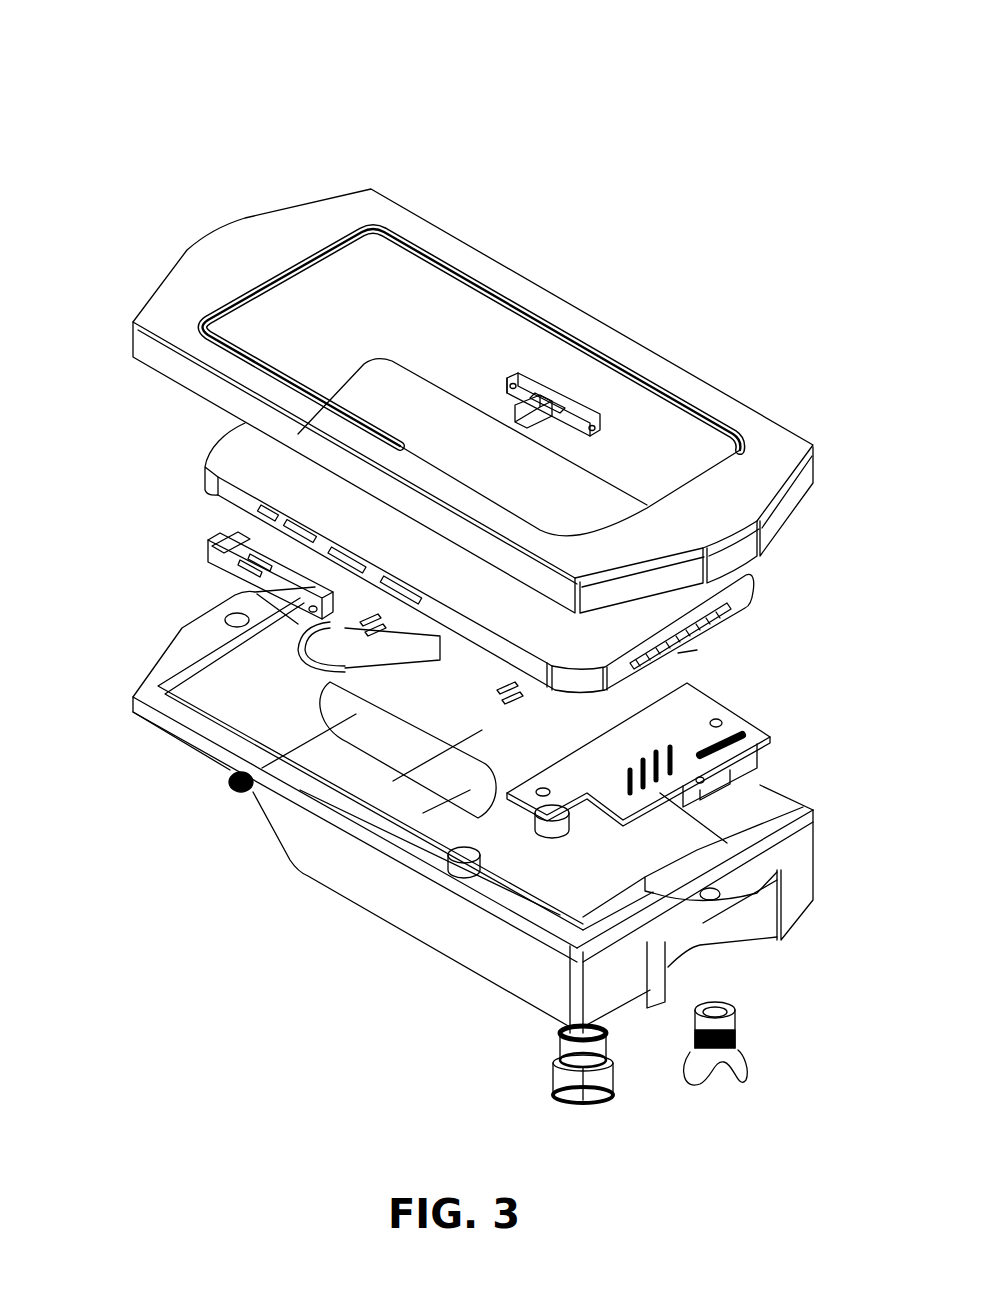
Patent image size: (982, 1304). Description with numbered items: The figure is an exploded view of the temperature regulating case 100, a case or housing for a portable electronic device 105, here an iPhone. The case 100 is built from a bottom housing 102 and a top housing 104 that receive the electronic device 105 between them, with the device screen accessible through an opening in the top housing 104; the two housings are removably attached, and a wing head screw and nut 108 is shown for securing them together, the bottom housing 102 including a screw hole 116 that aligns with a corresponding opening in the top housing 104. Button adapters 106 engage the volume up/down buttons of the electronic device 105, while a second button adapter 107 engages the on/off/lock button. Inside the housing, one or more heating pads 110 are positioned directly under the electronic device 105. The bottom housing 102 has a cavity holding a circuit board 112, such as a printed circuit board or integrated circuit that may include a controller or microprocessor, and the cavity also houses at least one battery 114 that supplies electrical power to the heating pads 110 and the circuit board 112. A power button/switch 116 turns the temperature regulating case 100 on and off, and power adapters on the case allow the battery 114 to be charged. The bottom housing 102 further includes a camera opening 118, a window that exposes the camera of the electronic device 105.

The temperature regulating case 100 is at (665, 173).
The bottom housing 102 is at (390, 898).
The top housing 104 is at (549, 293).
The electronic device 105 is at (228, 452).
The button adapters 106 is at (213, 548).
The second button adapter 107 is at (603, 428).
The wing head screw and nut 108 is at (743, 1030).
The heating pad 110 is at (680, 657).
The circuit board 112 is at (740, 713).
The battery 114 is at (403, 747).
The power button/switch 116 is at (550, 1080).
The camera opening 118 is at (333, 650).